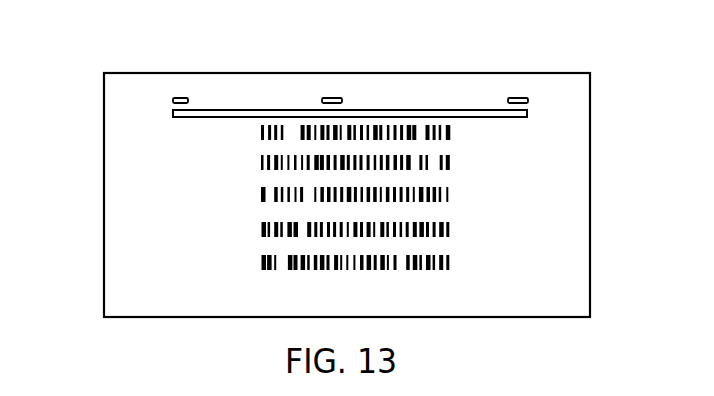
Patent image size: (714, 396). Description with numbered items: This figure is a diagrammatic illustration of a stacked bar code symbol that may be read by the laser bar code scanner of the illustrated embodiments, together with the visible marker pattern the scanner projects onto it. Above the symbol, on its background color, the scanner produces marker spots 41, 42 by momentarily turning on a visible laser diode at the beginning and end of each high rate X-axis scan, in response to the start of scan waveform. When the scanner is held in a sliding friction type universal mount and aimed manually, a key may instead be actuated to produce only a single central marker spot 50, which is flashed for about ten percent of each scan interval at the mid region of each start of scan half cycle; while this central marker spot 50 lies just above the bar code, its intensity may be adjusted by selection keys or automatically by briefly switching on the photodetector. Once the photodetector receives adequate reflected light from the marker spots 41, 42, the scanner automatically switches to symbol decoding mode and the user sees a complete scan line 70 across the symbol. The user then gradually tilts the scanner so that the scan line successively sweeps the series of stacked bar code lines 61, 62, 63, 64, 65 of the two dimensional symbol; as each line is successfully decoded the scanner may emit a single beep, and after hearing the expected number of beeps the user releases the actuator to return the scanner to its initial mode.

The marker spot 41 is at (180, 97).
The marker spot 42 is at (518, 97).
The central marker spot 50 is at (333, 97).
The complete scan line 70 is at (437, 108).
The bar code line 61 is at (455, 132).
The bar code line 62 is at (455, 163).
The bar code line 63 is at (452, 196).
The bar code line 64 is at (452, 230).
The bar code line 65 is at (452, 263).